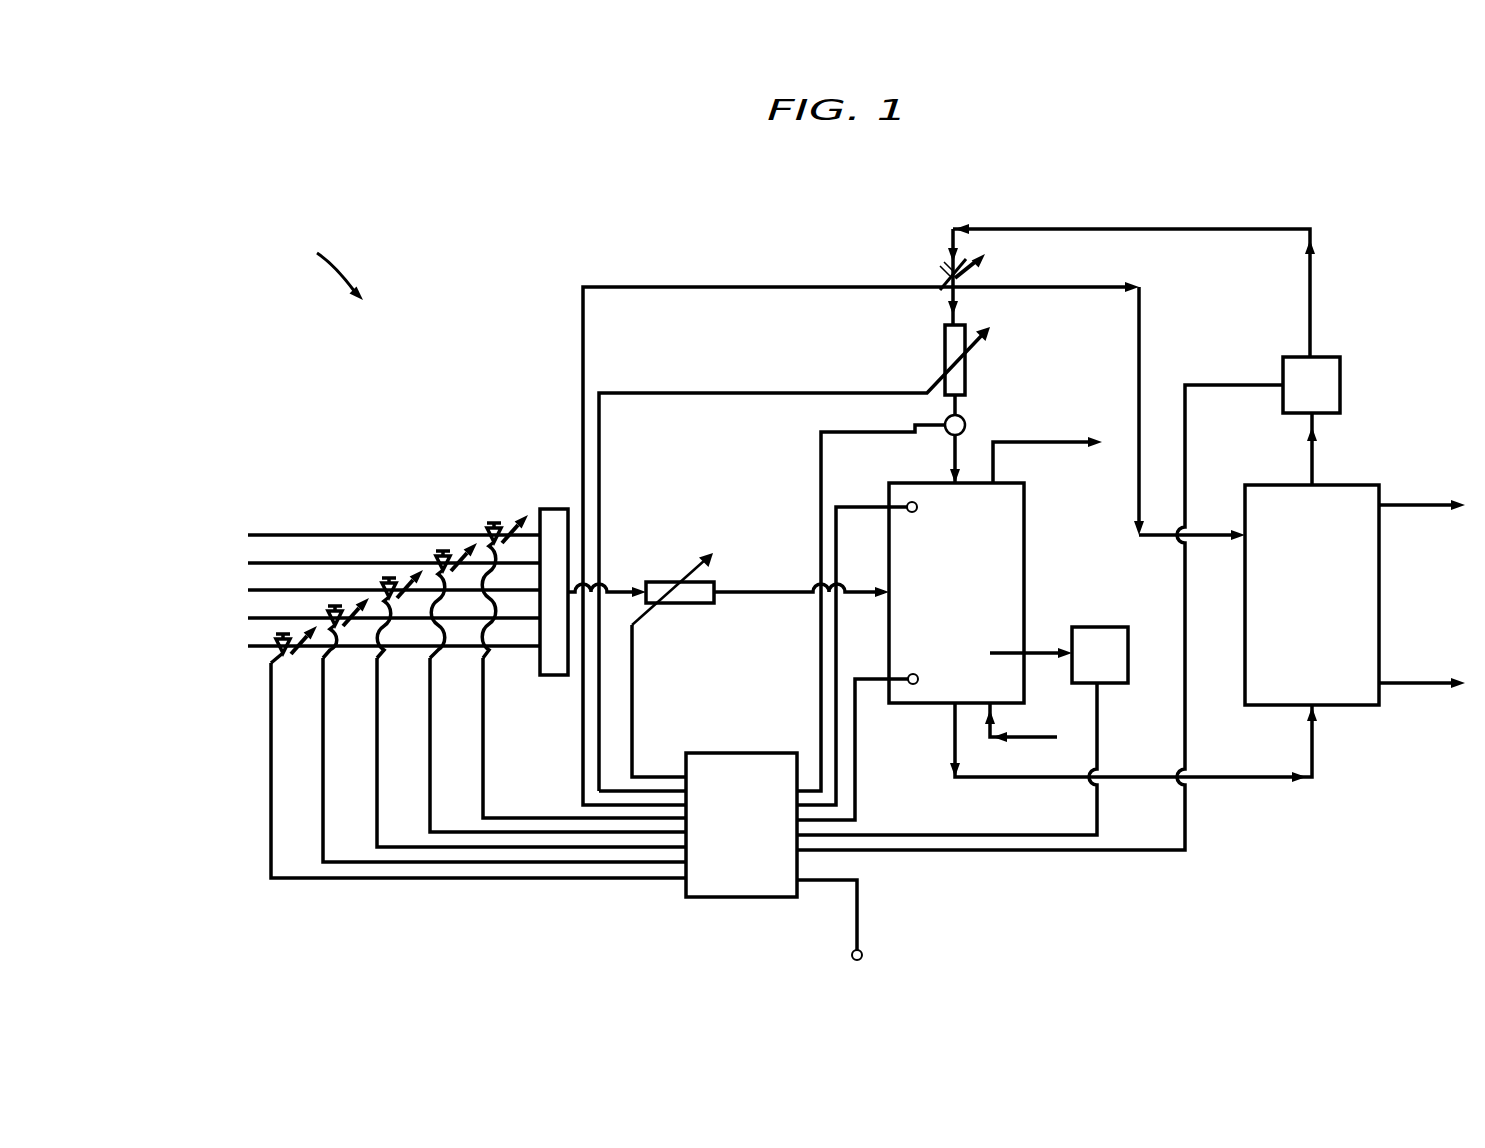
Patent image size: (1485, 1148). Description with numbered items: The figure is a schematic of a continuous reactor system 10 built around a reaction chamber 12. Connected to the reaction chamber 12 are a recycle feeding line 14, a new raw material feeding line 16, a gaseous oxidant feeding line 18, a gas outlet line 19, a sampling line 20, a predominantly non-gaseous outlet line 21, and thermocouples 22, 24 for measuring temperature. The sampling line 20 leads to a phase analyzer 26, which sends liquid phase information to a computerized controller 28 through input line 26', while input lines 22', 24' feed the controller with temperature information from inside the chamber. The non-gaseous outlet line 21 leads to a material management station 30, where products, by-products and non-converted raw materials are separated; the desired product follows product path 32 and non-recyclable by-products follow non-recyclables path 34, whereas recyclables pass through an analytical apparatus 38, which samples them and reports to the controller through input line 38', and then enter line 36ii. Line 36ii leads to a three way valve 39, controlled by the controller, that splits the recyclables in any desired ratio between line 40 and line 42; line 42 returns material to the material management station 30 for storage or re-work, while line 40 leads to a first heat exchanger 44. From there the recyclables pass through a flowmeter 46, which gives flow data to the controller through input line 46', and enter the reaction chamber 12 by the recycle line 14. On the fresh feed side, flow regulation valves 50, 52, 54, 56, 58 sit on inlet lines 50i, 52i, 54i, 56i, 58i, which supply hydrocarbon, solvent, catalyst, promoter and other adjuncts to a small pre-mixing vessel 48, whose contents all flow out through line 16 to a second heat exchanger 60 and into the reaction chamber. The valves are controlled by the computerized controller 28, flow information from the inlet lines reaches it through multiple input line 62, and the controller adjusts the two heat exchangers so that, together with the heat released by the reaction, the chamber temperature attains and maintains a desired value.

The continuous reactor system 10 is at (330, 261).
The reaction chamber 12 is at (1027, 520).
The recycle feeding line 14 is at (960, 450).
The new raw material feeding line 16 is at (767, 590).
The gaseous oxidant feeding line 18 is at (1035, 735).
The gas outlet line 19 is at (1060, 442).
The sampling line 20 is at (1033, 650).
The predominantly non-gaseous outlet line 21 is at (1232, 780).
The thermocouple 22 is at (958, 513).
The input line 22' is at (852, 623).
The thermocouple 24 is at (938, 644).
The input line 24' is at (852, 712).
The phase analyzer 26 is at (1100, 620).
The input line 26' is at (947, 759).
The computerized controller 28 is at (712, 753).
The material management station 30 is at (1379, 575).
The product path 32 is at (1415, 505).
The non-recyclables path 34 is at (1415, 683).
The line 36ii is at (1203, 228).
The analytical apparatus 38 is at (1361, 421).
The input line 38' is at (1040, 642).
The three way valve 39 is at (940, 272).
The line 40 is at (948, 293).
The line 42 is at (1140, 350).
The first heat exchanger 44 is at (913, 360).
The flowmeter 46 is at (913, 415).
The input line 46' is at (840, 608).
The pre-mixing vessel 48 is at (548, 509).
The flow regulation valve 50 is at (492, 557).
The inlet line 50i is at (248, 535).
The flow regulation valve 52 is at (441, 567).
The inlet line 52i is at (248, 563).
The flow regulation valve 54 is at (389, 576).
The inlet line 54i is at (248, 590).
The flow regulation valve 56 is at (334, 576).
The inlet line 56i is at (248, 618).
The flow regulation valve 58 is at (267, 668).
The inlet line 58i is at (248, 646).
The second heat exchanger 60 is at (673, 566).
The multiple input line 62 is at (857, 928).